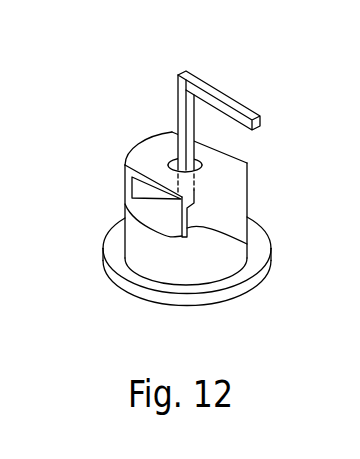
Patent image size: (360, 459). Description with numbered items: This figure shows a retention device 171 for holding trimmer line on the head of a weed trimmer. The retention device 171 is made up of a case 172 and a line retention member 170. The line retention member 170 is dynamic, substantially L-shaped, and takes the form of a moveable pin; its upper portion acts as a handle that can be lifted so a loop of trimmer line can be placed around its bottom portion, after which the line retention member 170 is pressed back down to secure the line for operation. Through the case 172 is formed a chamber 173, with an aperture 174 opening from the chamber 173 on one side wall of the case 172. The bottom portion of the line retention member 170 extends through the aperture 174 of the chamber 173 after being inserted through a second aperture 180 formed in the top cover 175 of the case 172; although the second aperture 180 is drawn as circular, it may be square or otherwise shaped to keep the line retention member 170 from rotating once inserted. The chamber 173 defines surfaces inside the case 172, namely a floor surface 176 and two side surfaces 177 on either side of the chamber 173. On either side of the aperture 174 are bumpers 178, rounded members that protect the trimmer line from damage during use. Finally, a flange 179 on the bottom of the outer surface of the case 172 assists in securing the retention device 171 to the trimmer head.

The line retention member 170 is at (217, 91).
The retention device 171 is at (110, 121).
The case 172 is at (233, 199).
The chamber 173 is at (160, 237).
The aperture 174 is at (118, 206).
The top cover 175 is at (236, 161).
The floor surface 176 is at (149, 217).
The side surfaces 177 is at (131, 190).
The bumpers 178 is at (247, 244).
The flange 179 is at (240, 277).
The second aperture 180 is at (177, 161).